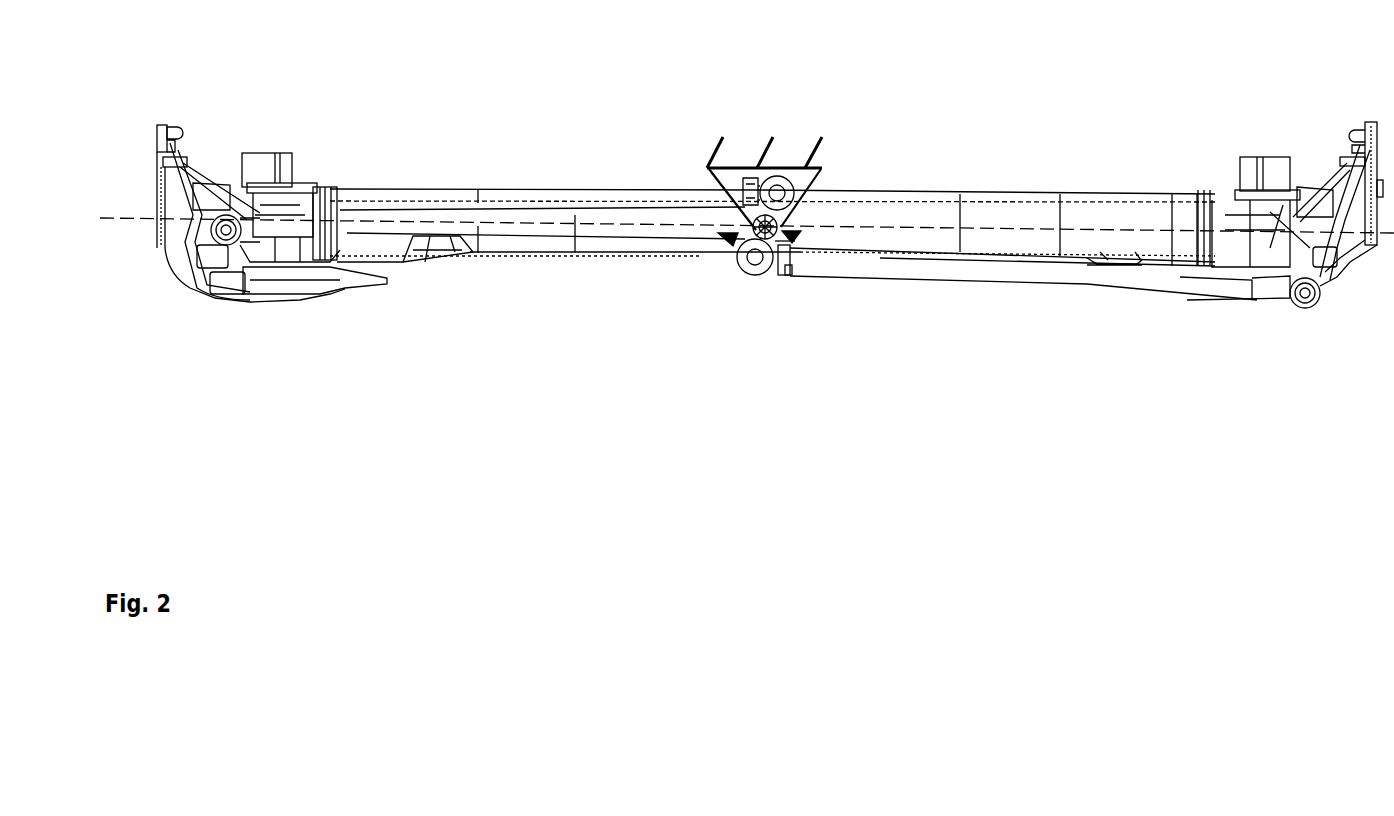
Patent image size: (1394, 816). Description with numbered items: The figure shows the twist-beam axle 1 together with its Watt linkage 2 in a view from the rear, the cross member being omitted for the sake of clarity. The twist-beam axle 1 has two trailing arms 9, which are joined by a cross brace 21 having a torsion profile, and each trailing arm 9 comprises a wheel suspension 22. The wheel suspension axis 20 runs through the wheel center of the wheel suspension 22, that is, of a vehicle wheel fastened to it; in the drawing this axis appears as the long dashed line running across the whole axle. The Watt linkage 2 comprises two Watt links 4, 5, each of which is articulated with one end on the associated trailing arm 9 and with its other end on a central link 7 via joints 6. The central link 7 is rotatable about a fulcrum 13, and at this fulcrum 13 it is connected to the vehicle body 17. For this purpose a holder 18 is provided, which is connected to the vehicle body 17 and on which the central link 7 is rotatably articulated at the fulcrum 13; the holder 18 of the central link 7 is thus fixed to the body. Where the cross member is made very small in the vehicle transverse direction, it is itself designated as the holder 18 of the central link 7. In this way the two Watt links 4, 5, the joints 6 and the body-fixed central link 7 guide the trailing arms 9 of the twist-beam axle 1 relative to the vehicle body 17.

The twist-beam axle 1 is at (508, 253).
The Watt linkage 2 is at (757, 318).
The Watt link 4 is at (648, 190).
The Watt link 5 is at (1040, 265).
The joints 6 is at (757, 242).
The central link 7 is at (745, 238).
The trailing arms 9 is at (285, 300).
The fulcrum 13 is at (790, 233).
The vehicle body 17 is at (737, 151).
The holder 18 is at (721, 182).
The wheel suspension axis 20 is at (1132, 235).
The cross brace 21 is at (364, 262).
The wheel suspension 22 is at (182, 268).